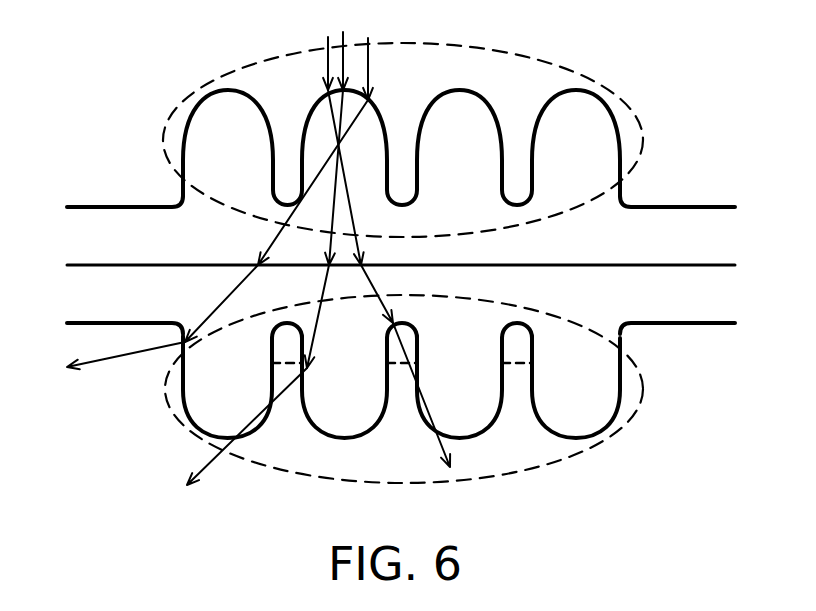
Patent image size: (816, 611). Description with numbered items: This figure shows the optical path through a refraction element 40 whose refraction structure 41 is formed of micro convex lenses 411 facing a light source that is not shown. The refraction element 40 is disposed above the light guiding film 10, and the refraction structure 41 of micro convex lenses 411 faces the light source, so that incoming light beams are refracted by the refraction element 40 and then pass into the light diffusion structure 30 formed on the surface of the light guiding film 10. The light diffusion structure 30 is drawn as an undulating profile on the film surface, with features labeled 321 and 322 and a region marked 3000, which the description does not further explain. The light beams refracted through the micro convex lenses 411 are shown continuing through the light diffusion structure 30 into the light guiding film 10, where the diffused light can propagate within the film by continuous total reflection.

The light guiding film 10 is at (401, 395).
The light diffusion structure 30 is at (165, 389).
The refraction element 40 is at (401, 126).
The refraction structure 41 is at (163, 141).
The micro convex lenses 411 is at (228, 89).
The protrusions 321 is at (404, 320).
The recesses 322 is at (344, 440).
The protrusion interface 3000 is at (285, 366).